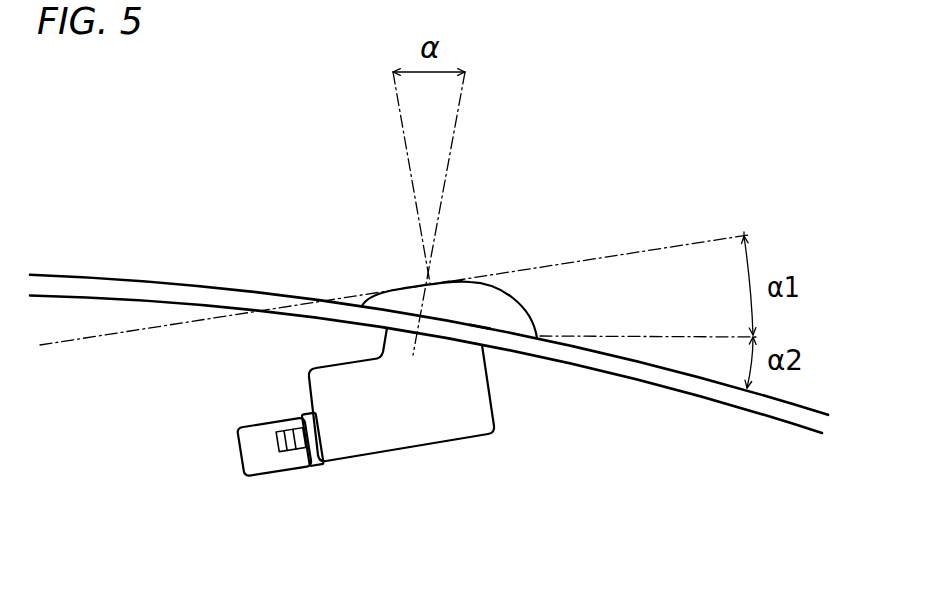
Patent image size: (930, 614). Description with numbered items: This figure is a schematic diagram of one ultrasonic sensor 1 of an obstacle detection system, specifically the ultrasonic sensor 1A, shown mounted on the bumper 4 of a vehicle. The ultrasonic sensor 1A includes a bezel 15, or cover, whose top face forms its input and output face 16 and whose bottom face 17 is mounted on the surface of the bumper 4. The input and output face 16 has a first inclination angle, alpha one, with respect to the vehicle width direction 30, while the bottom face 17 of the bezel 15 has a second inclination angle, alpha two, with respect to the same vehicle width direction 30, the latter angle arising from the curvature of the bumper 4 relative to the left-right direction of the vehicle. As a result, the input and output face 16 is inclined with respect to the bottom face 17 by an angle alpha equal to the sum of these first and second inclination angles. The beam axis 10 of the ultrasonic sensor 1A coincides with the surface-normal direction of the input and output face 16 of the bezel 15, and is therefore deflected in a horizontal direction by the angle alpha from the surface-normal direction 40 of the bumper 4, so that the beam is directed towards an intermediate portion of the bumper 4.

The ultrasonic sensor 1 is at (398, 418).
The ultrasonic sensor 1A is at (485, 438).
The bumper 4 is at (758, 415).
The beam axis 10 is at (402, 120).
The bezel 15 is at (540, 310).
The input and output face 16 is at (450, 283).
The bottom face 17 is at (478, 323).
The vehicle width direction 30 is at (652, 335).
The surface-normal direction 40 is at (457, 121).